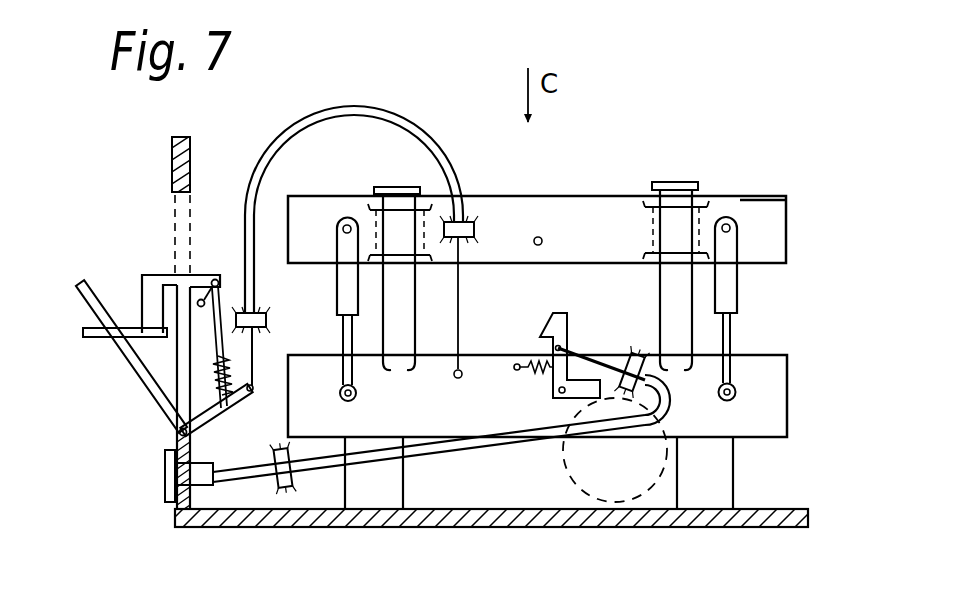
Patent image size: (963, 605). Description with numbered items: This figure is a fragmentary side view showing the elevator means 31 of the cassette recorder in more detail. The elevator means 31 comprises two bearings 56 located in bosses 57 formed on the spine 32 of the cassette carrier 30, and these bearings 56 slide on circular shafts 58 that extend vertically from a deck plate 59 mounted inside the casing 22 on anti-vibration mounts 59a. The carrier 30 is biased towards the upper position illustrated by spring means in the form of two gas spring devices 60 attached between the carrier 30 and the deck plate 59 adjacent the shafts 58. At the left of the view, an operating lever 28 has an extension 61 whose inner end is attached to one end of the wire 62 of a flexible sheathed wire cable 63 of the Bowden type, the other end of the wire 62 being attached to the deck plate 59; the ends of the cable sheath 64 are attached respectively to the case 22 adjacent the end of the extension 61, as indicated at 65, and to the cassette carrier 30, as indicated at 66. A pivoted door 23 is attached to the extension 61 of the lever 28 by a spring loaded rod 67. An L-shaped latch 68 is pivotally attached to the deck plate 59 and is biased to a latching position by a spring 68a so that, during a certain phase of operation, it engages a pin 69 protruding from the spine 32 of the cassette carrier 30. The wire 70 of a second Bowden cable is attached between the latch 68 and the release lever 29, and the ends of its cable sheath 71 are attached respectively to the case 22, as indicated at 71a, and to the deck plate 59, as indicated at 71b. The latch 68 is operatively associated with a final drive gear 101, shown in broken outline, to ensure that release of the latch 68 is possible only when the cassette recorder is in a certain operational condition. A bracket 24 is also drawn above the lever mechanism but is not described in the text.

The casing 22 is at (390, 515).
The pivoted door 23 is at (85, 330).
The bracket 24 is at (178, 193).
The operating lever 28 is at (131, 371).
The release lever 29 is at (166, 480).
The cassette carrier 30 is at (613, 195).
The elevator means 31 is at (802, 297).
The spine 32 is at (767, 202).
The bearings 56 is at (368, 212).
The bosses 57 is at (398, 188).
The circular shafts 58 is at (400, 333).
The deck plate 59 is at (767, 395).
The anti-vibration mounts 59a is at (387, 493).
The gas spring devices 60 is at (343, 283).
The extension 61 is at (244, 402).
The wire 62 is at (254, 356).
The flexible sheathed wire cable 63 is at (338, 104).
The cable sheath 64 is at (407, 127).
The sheath attachment to case 65 is at (262, 312).
The sheath attachment to cassette carrier 66 is at (474, 222).
The spring loaded rod 67 is at (177, 398).
The L-shaped latch 68 is at (581, 297).
The spring 68a is at (540, 347).
The pin 69 is at (538, 236).
The wire 70 is at (251, 473).
The cable sheath 71 is at (485, 446).
The sheath attachment to case 71a is at (287, 490).
The sheath attachment to deck plate 71b is at (633, 353).
The final drive gear 101 is at (613, 480).